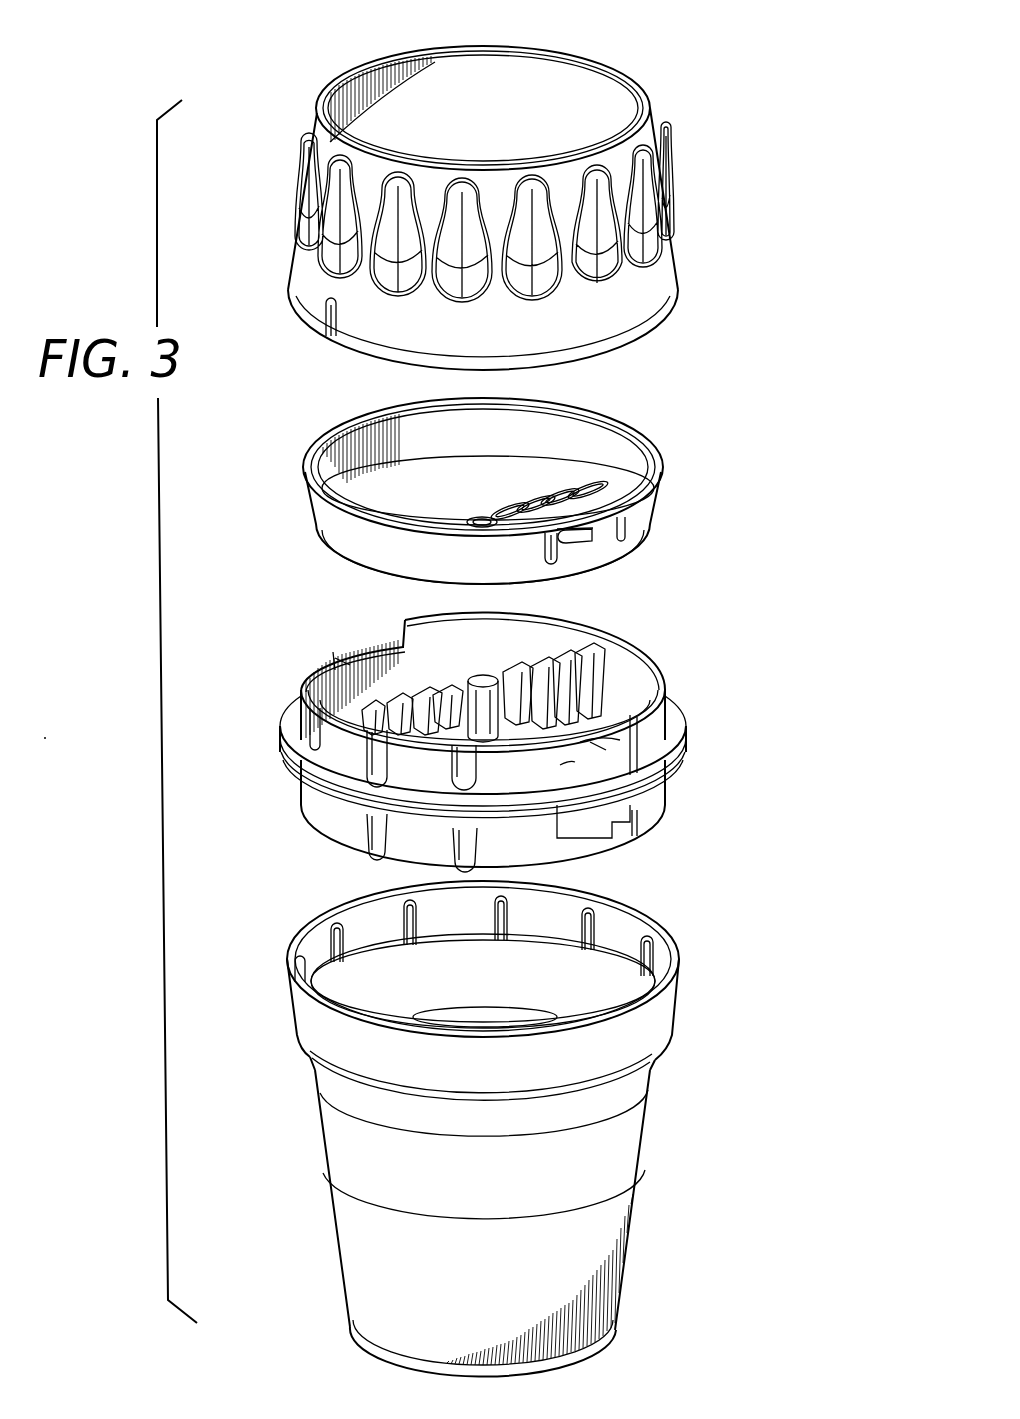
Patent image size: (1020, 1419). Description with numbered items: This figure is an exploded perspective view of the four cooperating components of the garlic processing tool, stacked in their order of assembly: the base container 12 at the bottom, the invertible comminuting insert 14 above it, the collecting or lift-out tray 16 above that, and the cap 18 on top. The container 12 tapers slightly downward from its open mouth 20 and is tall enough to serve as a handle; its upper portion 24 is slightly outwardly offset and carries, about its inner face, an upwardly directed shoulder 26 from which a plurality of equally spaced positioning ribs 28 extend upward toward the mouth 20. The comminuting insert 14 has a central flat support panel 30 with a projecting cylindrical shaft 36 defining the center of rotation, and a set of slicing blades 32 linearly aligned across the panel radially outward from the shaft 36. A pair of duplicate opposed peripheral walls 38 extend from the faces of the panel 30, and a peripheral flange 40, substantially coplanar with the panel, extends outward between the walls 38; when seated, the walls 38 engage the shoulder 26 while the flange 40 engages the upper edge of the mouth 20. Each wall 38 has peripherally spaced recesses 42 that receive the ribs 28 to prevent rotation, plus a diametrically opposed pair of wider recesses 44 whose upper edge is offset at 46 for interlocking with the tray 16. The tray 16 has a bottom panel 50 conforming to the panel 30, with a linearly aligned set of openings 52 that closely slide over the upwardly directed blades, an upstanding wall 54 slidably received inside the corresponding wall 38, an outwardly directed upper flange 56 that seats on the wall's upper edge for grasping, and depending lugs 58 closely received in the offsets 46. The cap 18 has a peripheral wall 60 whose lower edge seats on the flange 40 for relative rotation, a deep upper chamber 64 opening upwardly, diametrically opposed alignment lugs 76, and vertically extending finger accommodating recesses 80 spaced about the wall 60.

The base container 12 is at (647, 1150).
The comminuting insert 14 is at (682, 687).
The collecting tray 16 is at (667, 502).
The cap 18 is at (683, 258).
The open upper end or mouth 20 is at (678, 946).
The upper portion of container wall 24 is at (655, 1017).
The upwardly directed shoulder 26 is at (643, 921).
The positioning ribs 28 is at (582, 905).
The support panel 30 is at (598, 735).
The slicing blades 32 is at (598, 662).
The cylindrical shaft 36 is at (483, 676).
The peripheral walls 38 is at (297, 702).
The peripheral flange 40 is at (290, 750).
The recesses 42 is at (380, 840).
The wider recesses 44 is at (572, 765).
The offsets 46 is at (461, 570).
The bottom panel 50 is at (480, 480).
The openings 52 is at (493, 508).
The upstanding wall 54 is at (443, 540).
The upper flange 56 is at (318, 444).
The depending lugs 58 is at (597, 537).
The peripheral wall 60 is at (647, 297).
The upper chamber 64 is at (350, 75).
The lugs 76 is at (336, 327).
The finger accommodating recesses 80 is at (547, 280).